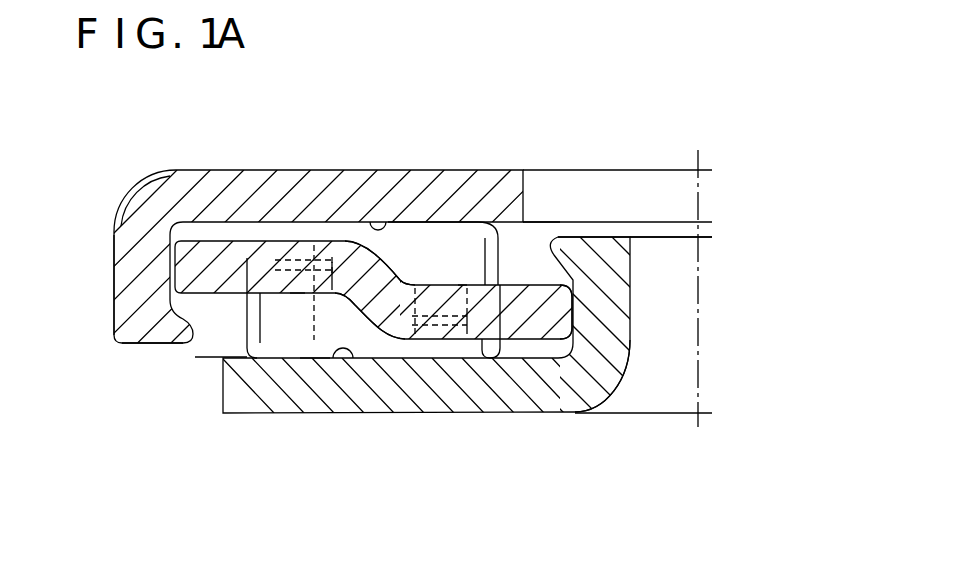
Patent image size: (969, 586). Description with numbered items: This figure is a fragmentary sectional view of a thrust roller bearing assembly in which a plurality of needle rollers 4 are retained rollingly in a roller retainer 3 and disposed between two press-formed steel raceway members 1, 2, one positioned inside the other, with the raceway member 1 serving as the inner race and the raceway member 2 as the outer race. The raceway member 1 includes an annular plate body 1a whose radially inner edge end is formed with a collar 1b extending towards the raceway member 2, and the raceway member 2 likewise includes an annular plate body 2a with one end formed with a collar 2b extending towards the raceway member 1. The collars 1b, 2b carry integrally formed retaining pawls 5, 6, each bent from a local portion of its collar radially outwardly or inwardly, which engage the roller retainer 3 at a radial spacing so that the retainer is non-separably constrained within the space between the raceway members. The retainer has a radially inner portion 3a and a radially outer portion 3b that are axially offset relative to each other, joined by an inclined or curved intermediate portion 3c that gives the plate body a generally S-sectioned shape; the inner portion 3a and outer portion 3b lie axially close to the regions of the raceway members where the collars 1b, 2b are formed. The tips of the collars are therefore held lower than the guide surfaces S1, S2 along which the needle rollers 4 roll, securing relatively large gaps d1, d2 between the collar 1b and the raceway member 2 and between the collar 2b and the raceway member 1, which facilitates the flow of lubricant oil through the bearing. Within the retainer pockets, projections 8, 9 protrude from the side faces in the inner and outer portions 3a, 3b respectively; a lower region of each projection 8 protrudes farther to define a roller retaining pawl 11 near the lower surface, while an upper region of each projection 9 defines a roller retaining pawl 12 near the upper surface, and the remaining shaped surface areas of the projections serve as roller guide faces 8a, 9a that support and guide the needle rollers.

The raceway member 1 is at (380, 417).
The annular plate body 1a is at (340, 360).
The collar 1b is at (612, 335).
The raceway member 2 is at (357, 168).
The annular plate body 2a is at (412, 190).
The collar 2b is at (137, 265).
The roller retainer 3 is at (216, 238).
The radially inner portion 3a is at (537, 327).
The radially outer portion 3b is at (222, 283).
The intermediate portion 3c is at (378, 318).
The needle roller 4 is at (482, 222).
The retaining pawl 5 is at (558, 240).
The retaining pawl 6 is at (182, 343).
The projection 8 is at (460, 345).
The roller guide face 8a is at (458, 285).
The projection 9 is at (297, 296).
The roller guide face 9a is at (311, 345).
The roller retaining pawl 11 is at (491, 345).
The roller retaining pawl 12 is at (301, 258).
The guide surface S1 is at (345, 360).
The guide surface S2 is at (388, 222).
The gap d1 is at (541, 228).
The gap d2 is at (202, 359).